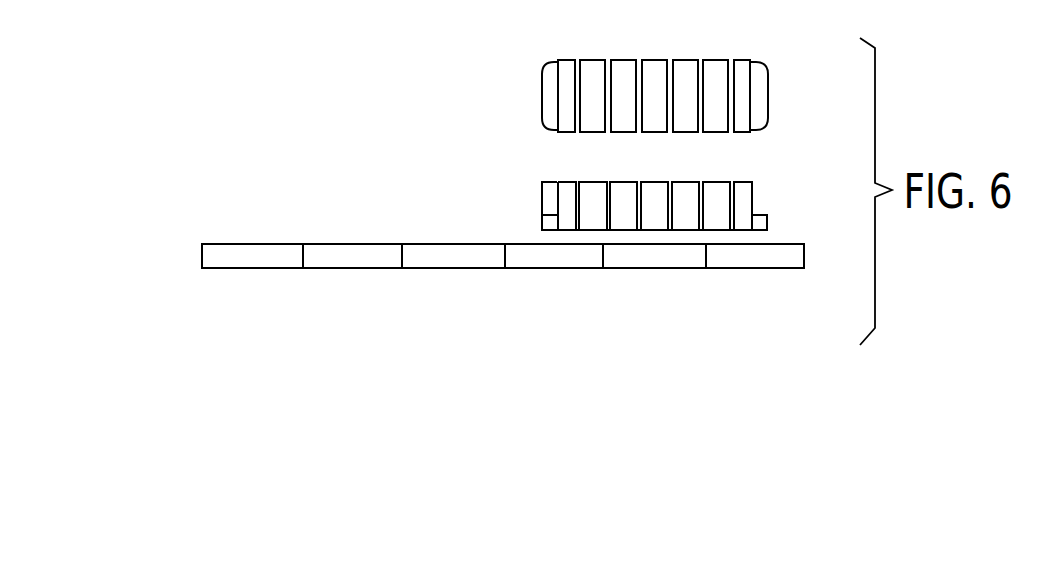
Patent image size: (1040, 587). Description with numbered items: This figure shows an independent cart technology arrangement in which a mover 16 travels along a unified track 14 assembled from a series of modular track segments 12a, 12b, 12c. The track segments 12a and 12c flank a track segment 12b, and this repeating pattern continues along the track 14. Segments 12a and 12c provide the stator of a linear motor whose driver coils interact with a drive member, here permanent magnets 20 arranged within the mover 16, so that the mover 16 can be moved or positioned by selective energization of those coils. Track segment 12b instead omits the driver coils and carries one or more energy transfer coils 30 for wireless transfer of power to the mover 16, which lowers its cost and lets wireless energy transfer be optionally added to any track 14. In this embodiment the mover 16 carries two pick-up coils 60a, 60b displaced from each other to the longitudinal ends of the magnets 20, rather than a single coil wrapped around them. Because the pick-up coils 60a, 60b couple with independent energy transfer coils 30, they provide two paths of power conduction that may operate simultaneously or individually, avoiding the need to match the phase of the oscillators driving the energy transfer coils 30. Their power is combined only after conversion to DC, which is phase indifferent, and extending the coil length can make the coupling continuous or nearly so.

The track 14 is at (198, 224).
The track segment 12a is at (252, 270).
The track segment 12b is at (354, 270).
The track segment 12c is at (454, 270).
The energy transfer coil 30 is at (378, 280).
The mover 16 is at (633, 119).
The permanent magnets 20 is at (622, 68).
The pick-up coil 60a is at (542, 108).
The pick-up coil 60b is at (768, 108).